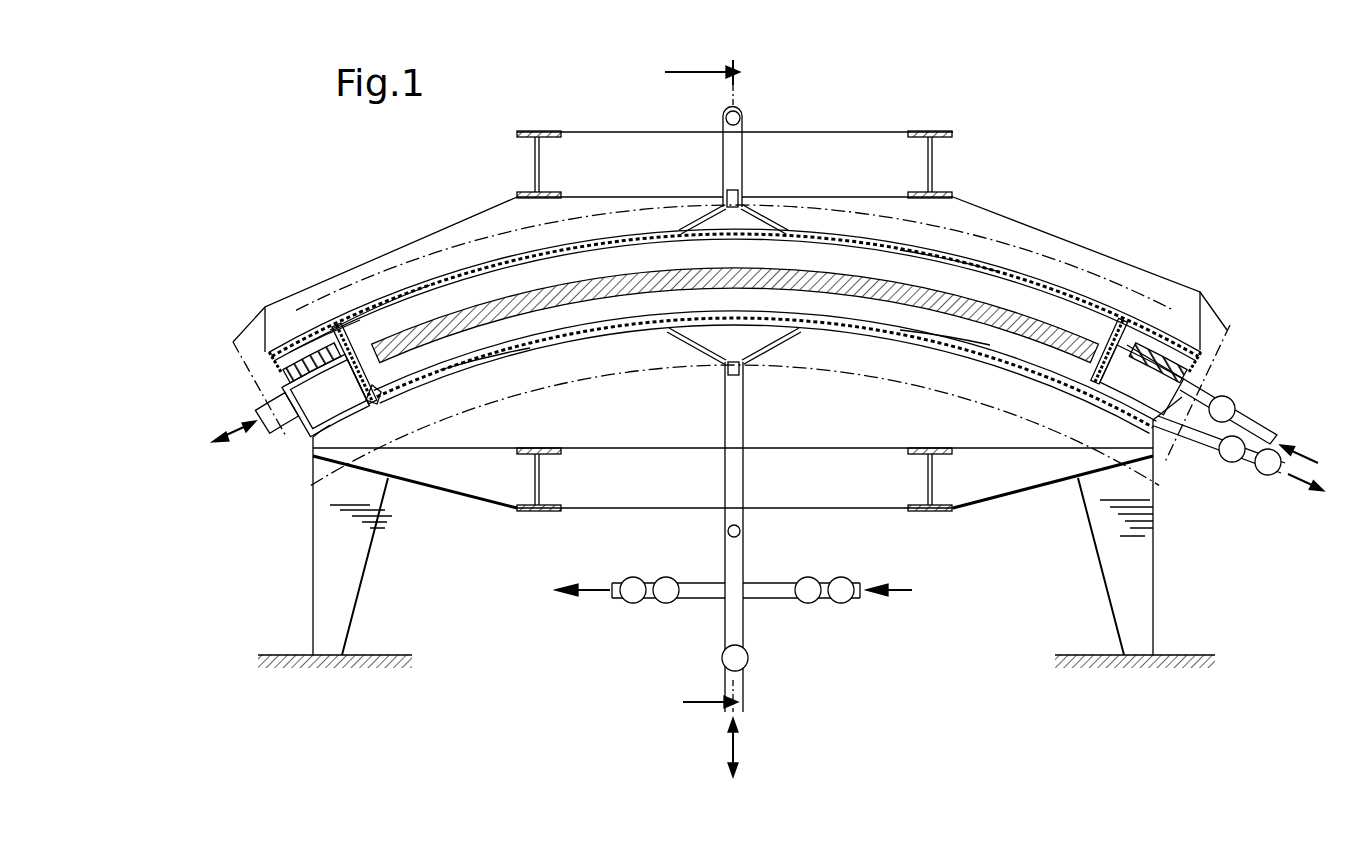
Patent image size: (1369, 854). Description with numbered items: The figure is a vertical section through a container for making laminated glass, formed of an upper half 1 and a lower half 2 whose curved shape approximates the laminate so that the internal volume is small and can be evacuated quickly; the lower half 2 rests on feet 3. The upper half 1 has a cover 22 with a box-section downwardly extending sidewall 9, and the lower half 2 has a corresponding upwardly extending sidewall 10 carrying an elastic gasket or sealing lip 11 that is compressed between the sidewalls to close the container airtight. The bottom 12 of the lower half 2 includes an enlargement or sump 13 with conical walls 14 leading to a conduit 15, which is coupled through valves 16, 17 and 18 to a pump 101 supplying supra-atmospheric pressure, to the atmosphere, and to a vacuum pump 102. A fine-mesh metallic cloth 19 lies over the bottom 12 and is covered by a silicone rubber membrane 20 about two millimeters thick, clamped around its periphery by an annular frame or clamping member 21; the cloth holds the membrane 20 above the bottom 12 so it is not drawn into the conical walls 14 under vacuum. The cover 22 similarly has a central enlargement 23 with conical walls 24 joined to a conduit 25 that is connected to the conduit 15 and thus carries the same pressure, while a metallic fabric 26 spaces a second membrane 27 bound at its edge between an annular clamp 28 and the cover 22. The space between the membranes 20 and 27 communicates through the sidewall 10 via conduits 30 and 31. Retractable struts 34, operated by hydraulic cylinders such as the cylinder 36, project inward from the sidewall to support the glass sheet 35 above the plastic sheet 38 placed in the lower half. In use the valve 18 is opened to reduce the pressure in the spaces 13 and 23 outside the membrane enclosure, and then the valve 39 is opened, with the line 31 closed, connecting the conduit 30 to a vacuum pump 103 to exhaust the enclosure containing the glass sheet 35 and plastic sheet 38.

The upper half 1 is at (1085, 275).
The lower half 2 is at (975, 427).
The feet 3 is at (316, 566).
The downwardly extending sidewall 9 is at (267, 363).
The upwardly extending sidewall 10 is at (307, 433).
The gasket or sealing lip 11 is at (287, 382).
The bottom or floor 12 is at (490, 363).
The enlargement or sump 13 is at (730, 347).
The conical walls 14 is at (767, 345).
The conduit 15 is at (737, 487).
The valve 16 is at (813, 602).
The valve 17 is at (748, 660).
The valve 18 is at (658, 602).
The metallic cloth 19 is at (578, 343).
The membrane 20 is at (462, 383).
The annular frame or clamping member 21 is at (373, 407).
The cover 22 is at (463, 270).
The enlargement 23 is at (712, 215).
The conical walls 24 is at (765, 218).
The conduit 25 is at (743, 118).
The metallic fabric 26 is at (960, 253).
The membrane 27 is at (395, 297).
The annular clamp 28 is at (340, 327).
The conduit 30 is at (1207, 437).
The conduit 31 is at (1203, 397).
The retractable struts 34 is at (378, 393).
The glass sheet 35 is at (1027, 317).
The hydraulic cylinder 36 is at (283, 417).
The plastic sheet 38 is at (948, 338).
The valve 39 is at (1240, 455).
The pump 101 is at (842, 577).
The pump 102 is at (637, 555).
The vacuum pump 103 is at (1270, 477).